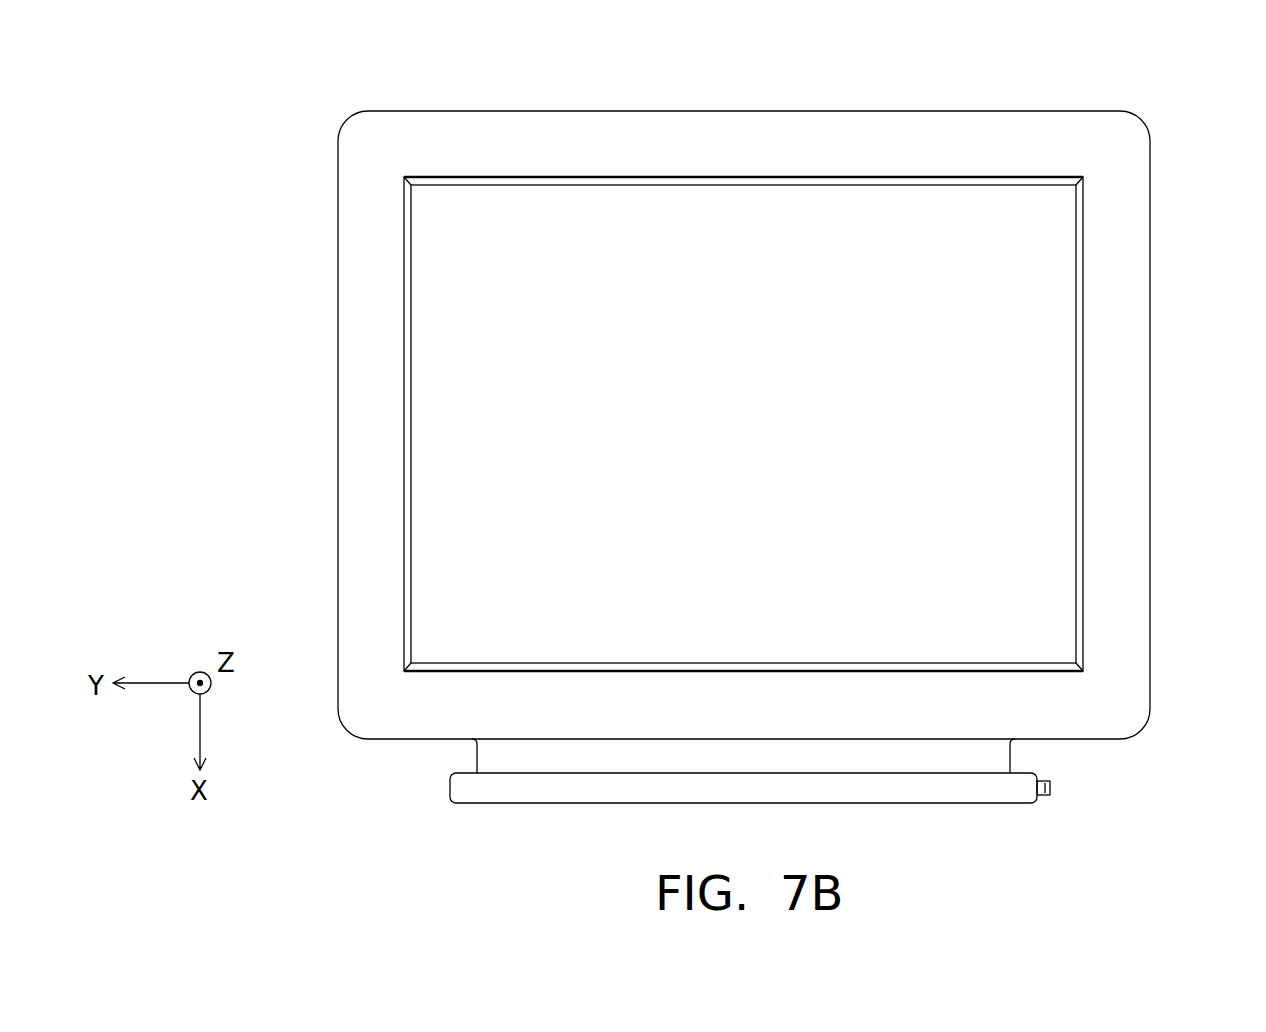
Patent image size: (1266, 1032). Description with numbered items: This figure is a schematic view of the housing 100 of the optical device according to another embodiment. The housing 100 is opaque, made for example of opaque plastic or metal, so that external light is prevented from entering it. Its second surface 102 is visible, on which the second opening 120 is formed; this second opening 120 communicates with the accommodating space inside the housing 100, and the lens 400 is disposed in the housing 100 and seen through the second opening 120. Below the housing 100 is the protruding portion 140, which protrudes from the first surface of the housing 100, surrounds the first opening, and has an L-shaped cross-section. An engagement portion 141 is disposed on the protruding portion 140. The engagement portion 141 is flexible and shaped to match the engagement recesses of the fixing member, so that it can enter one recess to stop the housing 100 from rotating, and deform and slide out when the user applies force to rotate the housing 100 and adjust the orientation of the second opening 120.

The housing 100 is at (694, 403).
The second surface 102 is at (862, 145).
The second opening 120 is at (828, 352).
The lens 400 is at (1005, 425).
The protruding portion 140 is at (475, 787).
The engagement portion 141 is at (1052, 786).